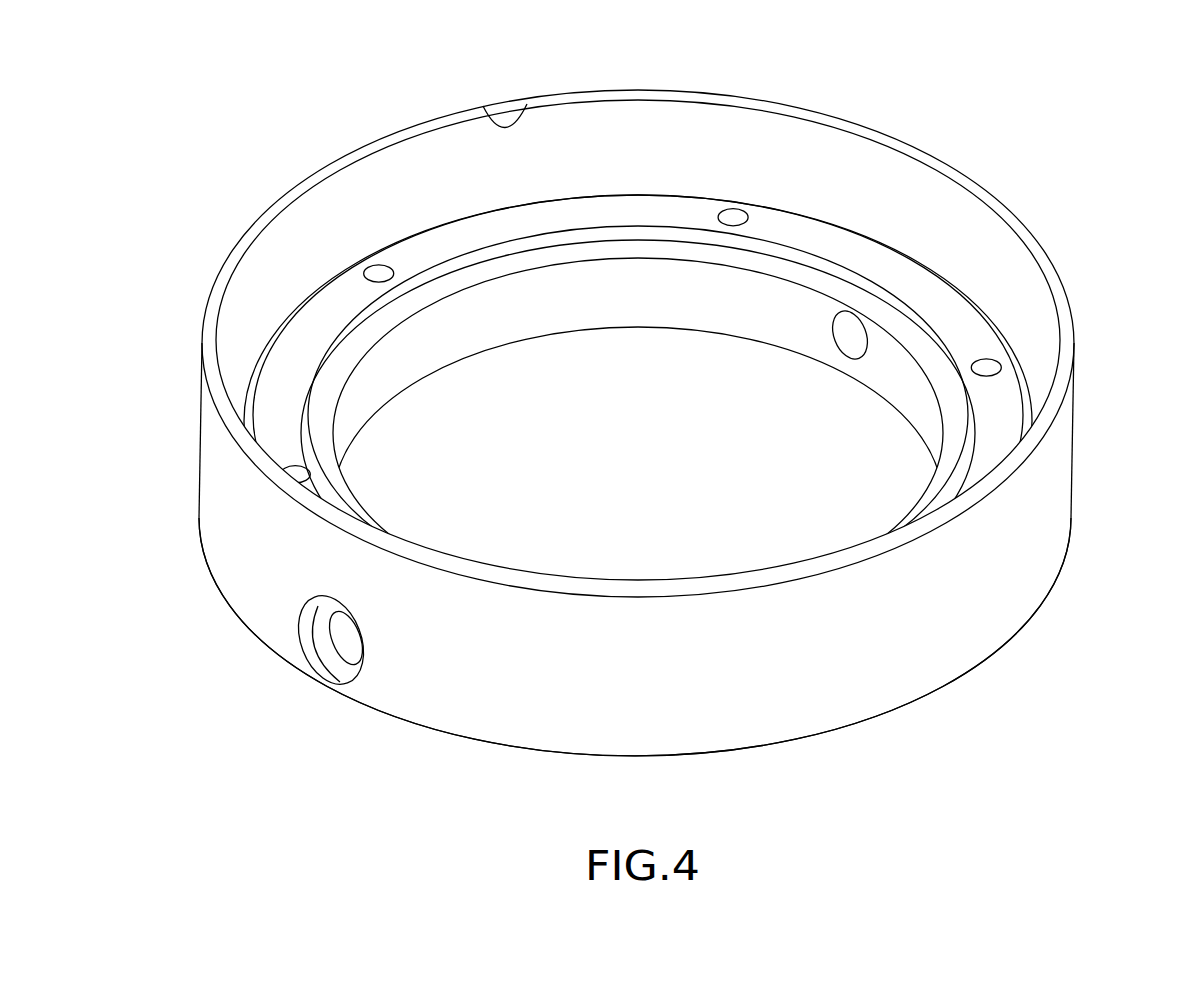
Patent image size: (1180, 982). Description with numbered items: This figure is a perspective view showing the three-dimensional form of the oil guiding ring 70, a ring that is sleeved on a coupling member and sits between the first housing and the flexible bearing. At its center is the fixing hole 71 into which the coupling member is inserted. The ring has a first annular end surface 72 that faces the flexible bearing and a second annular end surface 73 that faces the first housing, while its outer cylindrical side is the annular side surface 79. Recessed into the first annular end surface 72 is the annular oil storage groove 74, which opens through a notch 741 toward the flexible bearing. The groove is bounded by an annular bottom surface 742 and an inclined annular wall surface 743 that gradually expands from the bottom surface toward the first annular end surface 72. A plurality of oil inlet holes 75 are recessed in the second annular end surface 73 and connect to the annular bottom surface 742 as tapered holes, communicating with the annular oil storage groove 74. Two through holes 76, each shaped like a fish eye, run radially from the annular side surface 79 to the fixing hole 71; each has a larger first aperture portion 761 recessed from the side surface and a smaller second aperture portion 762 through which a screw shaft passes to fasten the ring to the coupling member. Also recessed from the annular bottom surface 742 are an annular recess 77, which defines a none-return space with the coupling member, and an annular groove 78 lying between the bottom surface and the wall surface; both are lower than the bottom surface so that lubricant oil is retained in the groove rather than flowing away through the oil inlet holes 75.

The oil guiding ring 70 is at (960, 138).
The fixing hole 71 is at (637, 310).
The first annular end surface 72 is at (1025, 238).
The second annular end surface 73 is at (953, 673).
The annular oil storage groove 74 is at (712, 135).
The notch 741 is at (488, 112).
The annular bottom surface 742 is at (768, 223).
The annular wall surface 743 is at (340, 203).
The oil inlet holes 75 is at (990, 365).
The through holes 76 is at (847, 343).
The first aperture portion 761 is at (307, 630).
The second aperture portion 762 is at (343, 630).
The annular recess 77 is at (957, 437).
The annular groove 78 is at (1036, 397).
The annular side surface 79 is at (1023, 580).